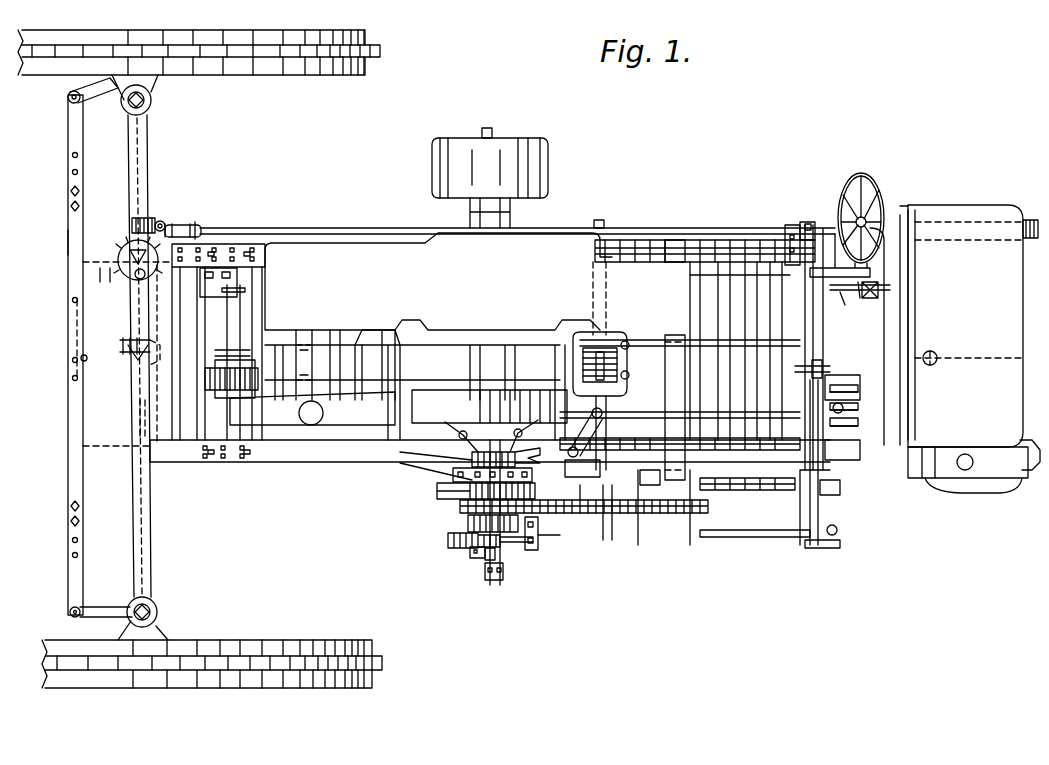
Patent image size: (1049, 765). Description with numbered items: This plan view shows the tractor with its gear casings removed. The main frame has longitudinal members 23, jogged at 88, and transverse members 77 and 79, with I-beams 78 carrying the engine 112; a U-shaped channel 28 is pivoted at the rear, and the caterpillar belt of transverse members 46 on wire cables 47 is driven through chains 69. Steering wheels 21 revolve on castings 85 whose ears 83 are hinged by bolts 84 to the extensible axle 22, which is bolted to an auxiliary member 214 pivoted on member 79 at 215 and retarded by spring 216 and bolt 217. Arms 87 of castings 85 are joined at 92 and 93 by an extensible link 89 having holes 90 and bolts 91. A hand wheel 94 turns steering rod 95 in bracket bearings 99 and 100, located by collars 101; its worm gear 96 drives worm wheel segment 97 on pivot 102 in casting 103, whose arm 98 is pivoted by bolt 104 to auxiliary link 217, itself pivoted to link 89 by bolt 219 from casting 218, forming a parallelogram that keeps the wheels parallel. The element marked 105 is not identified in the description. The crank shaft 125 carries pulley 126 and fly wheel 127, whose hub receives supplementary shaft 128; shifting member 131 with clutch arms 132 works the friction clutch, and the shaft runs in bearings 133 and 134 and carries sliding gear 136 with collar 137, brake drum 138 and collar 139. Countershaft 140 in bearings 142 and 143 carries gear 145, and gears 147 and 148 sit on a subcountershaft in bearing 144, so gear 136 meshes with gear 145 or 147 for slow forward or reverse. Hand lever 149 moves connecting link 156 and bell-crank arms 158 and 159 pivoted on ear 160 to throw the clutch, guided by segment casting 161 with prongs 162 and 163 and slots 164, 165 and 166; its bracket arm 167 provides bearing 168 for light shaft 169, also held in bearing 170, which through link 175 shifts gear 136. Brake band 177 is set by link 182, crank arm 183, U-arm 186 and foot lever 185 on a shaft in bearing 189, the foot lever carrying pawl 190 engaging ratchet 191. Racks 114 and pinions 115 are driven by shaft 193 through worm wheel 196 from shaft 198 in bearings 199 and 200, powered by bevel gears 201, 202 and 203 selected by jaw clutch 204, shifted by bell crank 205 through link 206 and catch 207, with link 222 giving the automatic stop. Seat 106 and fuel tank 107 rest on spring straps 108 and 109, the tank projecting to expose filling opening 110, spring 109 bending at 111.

The steering wheels 21 is at (305, 65).
The extensible axle 22 is at (141, 148).
The main frame longitudinal members 23 is at (264, 243).
The U-shaped channel 28 is at (902, 310).
The transverse members 46 is at (712, 265).
The wire cables 47 is at (748, 265).
The chains 69 is at (652, 244).
The rear transverse frame member 77 is at (806, 312).
The I-beams 78 is at (312, 360).
The transverse frame member 79 is at (152, 375).
The ears 83 is at (152, 101).
The bolt 84 is at (148, 108).
The castings 85 is at (130, 94).
The projecting arms 87 is at (92, 97).
The jog 88 is at (402, 240).
The extensible link 89 is at (70, 150).
The holes 90 is at (70, 555).
The bolts 91 is at (70, 521).
The pivot connection 92 is at (70, 613).
The pivot connection 93 is at (68, 97).
The hand wheel 94 is at (861, 175).
The steering rod 95 is at (702, 270).
The worm gear 96 is at (162, 222).
The worm wheel segment 97 is at (124, 250).
The arm 98 is at (105, 282).
The bracket bearing 99 is at (203, 230).
The bracket bearing 100 is at (790, 226).
The collars 101 is at (196, 220).
The pivot 102 is at (130, 268).
The casting 103 is at (132, 224).
The bolt 104 is at (81, 270).
The bar 105 is at (70, 240).
The operator's seat 106 is at (960, 205).
The fuel tank 107 is at (930, 479).
The upper spring straps 108 is at (868, 468).
The lower spring straps 109 is at (1030, 220).
The filling opening 110 is at (965, 471).
The bend in spring 111 is at (990, 493).
The engine 112 is at (393, 240).
The racks 114 is at (226, 247).
The pinions 115 is at (247, 247).
The crank shaft 125 is at (488, 128).
The pulley 126 is at (530, 140).
The fly wheel 127 is at (456, 445).
The supplementary shaft 128 is at (522, 560).
The shifting member 131 is at (426, 481).
The clutch arms 132 is at (460, 438).
The bearing 133 is at (470, 492).
The bearing 134 is at (490, 582).
The sliding gear 136 is at (450, 546).
The collar 137 is at (486, 562).
The brake drum 138 is at (556, 540).
The collar 139 is at (503, 578).
The countershaft 140 is at (640, 547).
The bearing 142 is at (652, 487).
The bearing 143 is at (600, 220).
The bearing 144 is at (582, 515).
The gear 145 is at (691, 547).
The gear 147 is at (470, 556).
The gear 148 is at (465, 525).
The hand lever 149 is at (844, 409).
The connecting link 156 is at (815, 520).
The bell crank arm 158 is at (662, 514).
The fork arm 159 is at (534, 482).
The ear 160 is at (608, 542).
The segment casting 161 is at (880, 398).
The long prongs 162 is at (860, 382).
The shorter prongs 163 is at (860, 406).
The slot 164 is at (860, 390).
The slot 165 is at (880, 413).
The slot 166 is at (880, 430).
The bracket arm 167 is at (836, 528).
The bearing 168 is at (820, 549).
The light shaft 169 is at (777, 539).
The bearing 170 is at (536, 552).
The link 175 is at (820, 500).
The brake band 177 is at (534, 494).
The link 182 is at (742, 491).
The crank arm 183 is at (818, 488).
The foot lever 185 is at (880, 290).
The U-arm 186 is at (875, 370).
The bearing 189 is at (810, 222).
The pawl 190 is at (872, 275).
The ratchet 191 is at (838, 266).
The shaft 193 is at (235, 290).
The worm wheel 196 is at (226, 366).
The shaft 198 is at (346, 360).
The bearing 199 is at (222, 350).
The inclosing bearing 200 is at (578, 350).
The bevel gear 201 is at (604, 352).
The bevel gear 202 is at (578, 338).
The bevel gear 203 is at (606, 440).
The jaw clutch 204 is at (625, 341).
The bell crank 205 is at (629, 372).
The connecting link 206 is at (674, 345).
The engaging catch 207 is at (830, 350).
The auxiliary transverse member 214 is at (145, 420).
The pivot 215 is at (150, 345).
The spring 216 is at (132, 362).
The auxiliary link 217 is at (120, 345).
The casting 218 is at (73, 300).
The bolt 219 is at (81, 358).
The link 222 is at (390, 350).